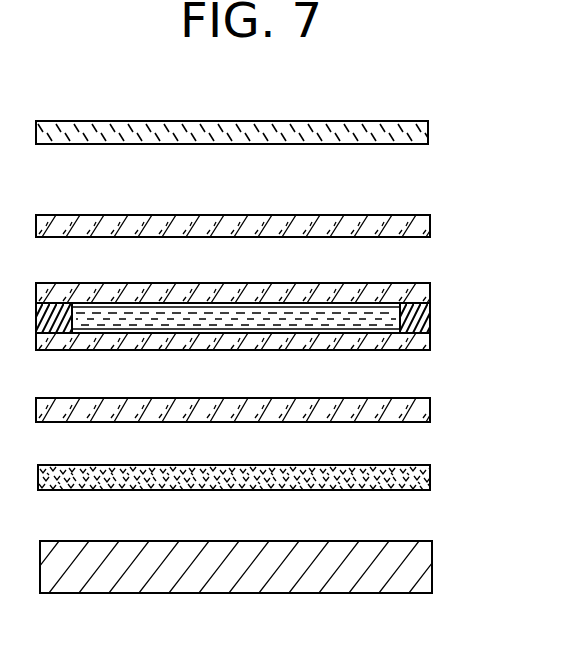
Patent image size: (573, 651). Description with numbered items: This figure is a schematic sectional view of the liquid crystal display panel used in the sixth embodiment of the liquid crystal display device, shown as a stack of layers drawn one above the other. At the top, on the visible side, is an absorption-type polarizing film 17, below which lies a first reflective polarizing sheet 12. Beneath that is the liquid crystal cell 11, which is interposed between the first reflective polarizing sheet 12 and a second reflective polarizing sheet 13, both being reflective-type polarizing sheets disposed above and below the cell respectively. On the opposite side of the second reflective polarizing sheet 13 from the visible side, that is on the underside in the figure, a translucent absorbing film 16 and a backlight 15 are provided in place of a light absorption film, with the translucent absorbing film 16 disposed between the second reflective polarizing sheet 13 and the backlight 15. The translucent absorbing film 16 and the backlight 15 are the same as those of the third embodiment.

The absorption-type polarizing film 17 is at (428, 134).
The first reflective polarizing sheet 12 is at (430, 226).
The liquid crystal cell 11 is at (438, 319).
The second reflective polarizing sheet 13 is at (430, 410).
The translucent absorbing film 16 is at (430, 477).
The backlight 15 is at (420, 562).